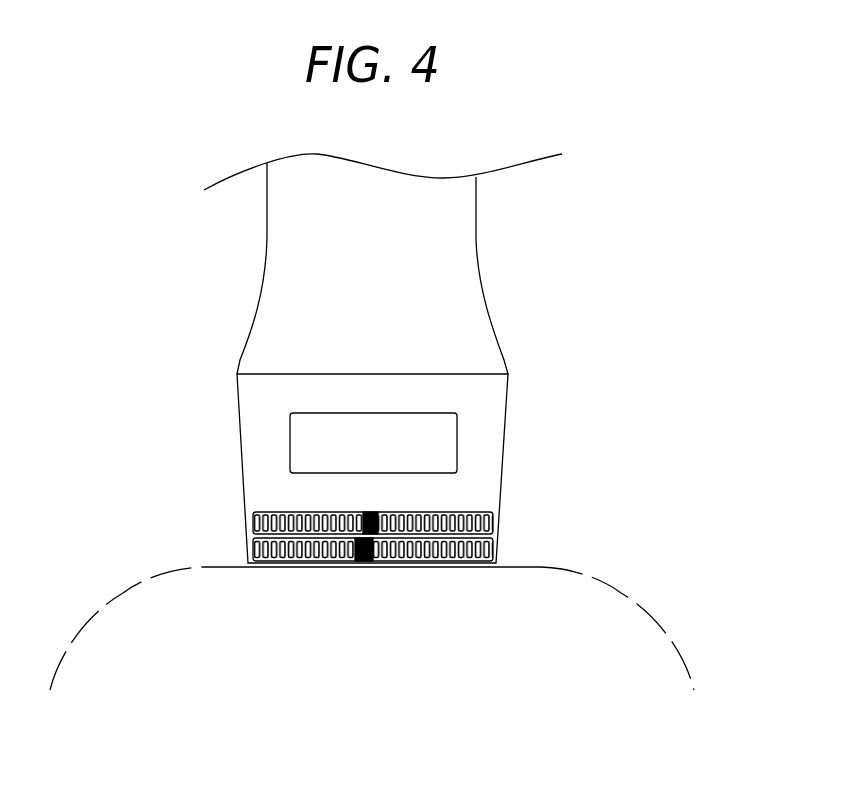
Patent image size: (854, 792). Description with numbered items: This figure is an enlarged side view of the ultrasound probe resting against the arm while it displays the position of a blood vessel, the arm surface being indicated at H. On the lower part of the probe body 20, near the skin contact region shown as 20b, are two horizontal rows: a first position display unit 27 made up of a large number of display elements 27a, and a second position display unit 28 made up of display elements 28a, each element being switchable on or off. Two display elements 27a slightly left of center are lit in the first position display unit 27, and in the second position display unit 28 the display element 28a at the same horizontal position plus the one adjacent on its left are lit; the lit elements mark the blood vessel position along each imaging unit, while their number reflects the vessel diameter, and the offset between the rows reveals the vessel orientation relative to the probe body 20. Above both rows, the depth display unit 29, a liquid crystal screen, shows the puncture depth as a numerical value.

The probe body 20 is at (264, 272).
The distal portion of probe body 20b is at (485, 453).
The depth display unit 29 is at (460, 432).
The second position display unit 28 is at (497, 520).
The display elements 28a is at (398, 561).
The first position display unit 27 is at (497, 548).
The display elements 27a is at (322, 561).
The skin surface of human body H is at (127, 592).